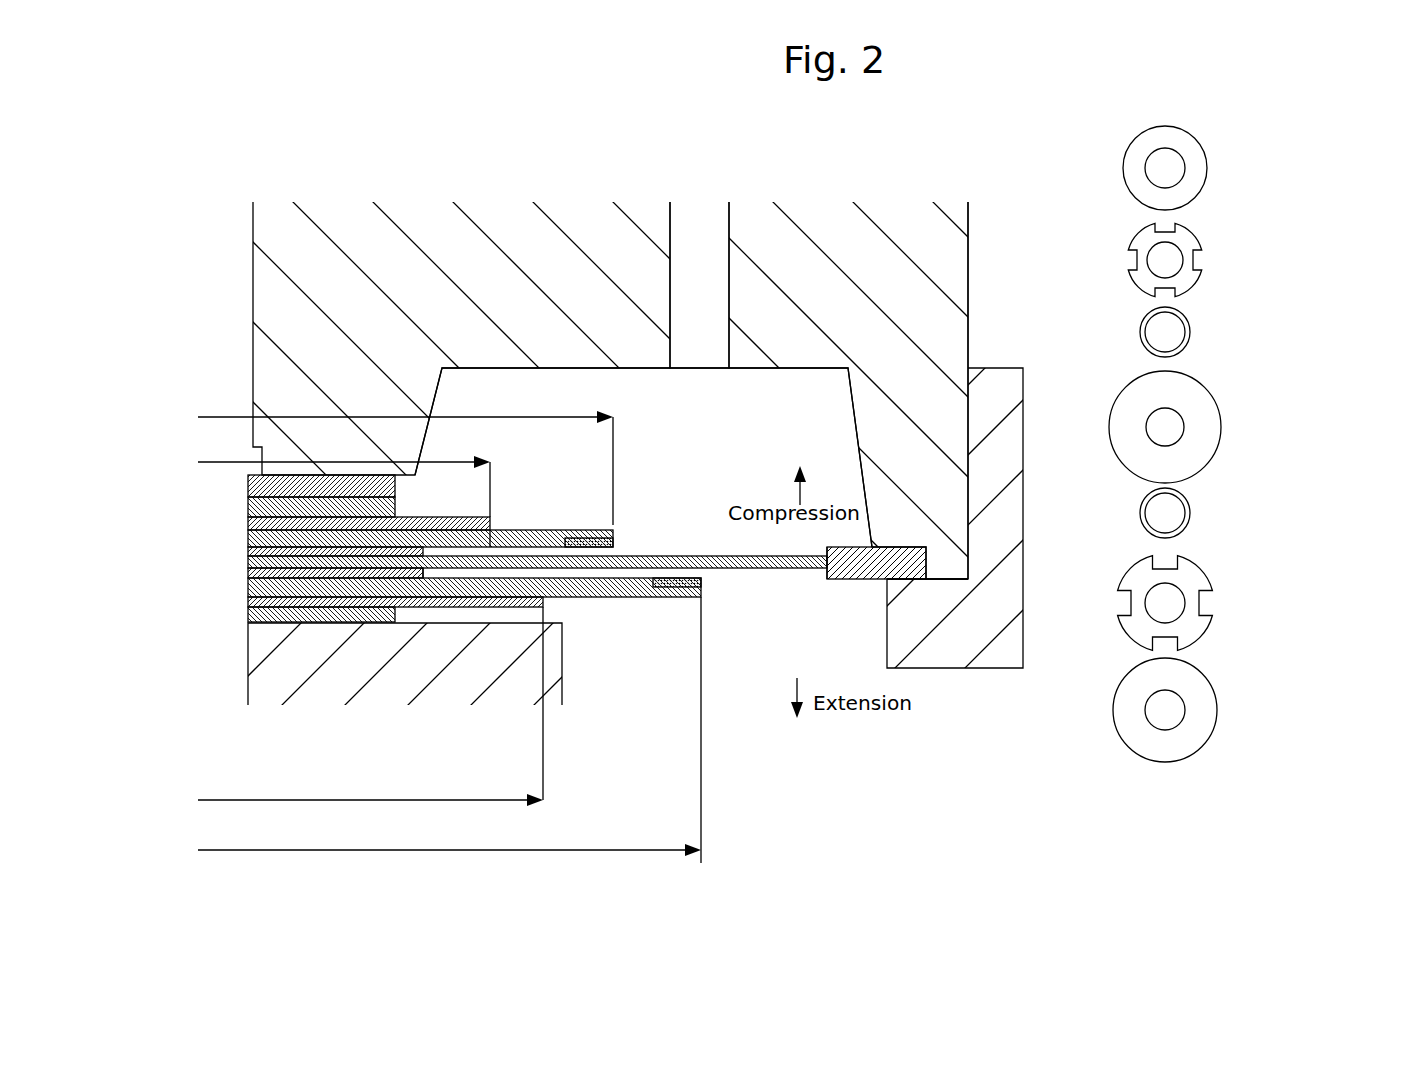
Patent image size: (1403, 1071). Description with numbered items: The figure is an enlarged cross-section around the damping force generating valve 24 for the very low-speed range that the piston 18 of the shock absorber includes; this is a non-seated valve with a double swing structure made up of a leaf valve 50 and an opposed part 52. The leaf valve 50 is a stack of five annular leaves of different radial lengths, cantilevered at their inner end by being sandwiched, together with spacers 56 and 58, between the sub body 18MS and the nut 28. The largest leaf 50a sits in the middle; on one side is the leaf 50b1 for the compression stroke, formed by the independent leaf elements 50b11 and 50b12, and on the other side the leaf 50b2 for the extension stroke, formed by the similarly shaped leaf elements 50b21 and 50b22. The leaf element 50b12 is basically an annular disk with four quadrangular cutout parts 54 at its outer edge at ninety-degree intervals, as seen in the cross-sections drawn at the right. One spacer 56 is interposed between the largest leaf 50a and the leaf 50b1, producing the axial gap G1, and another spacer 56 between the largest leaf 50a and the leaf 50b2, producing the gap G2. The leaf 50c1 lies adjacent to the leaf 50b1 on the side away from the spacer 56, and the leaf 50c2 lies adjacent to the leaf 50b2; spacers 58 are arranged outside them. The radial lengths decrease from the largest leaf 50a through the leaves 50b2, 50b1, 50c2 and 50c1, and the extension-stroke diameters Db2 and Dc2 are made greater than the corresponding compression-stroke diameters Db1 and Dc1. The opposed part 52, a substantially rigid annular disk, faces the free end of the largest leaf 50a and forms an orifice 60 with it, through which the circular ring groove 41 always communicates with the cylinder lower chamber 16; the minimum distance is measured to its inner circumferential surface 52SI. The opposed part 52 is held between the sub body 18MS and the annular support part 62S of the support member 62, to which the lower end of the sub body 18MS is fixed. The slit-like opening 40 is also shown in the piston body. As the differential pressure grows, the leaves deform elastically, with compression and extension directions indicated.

The cylinder lower chamber 16 is at (757, 665).
The piston 18 is at (990, 172).
The sub body 18MS is at (917, 255).
The damping force generating valve for very low-speed range 24 is at (742, 690).
The nut 28 is at (320, 685).
The slit 40 is at (700, 255).
The circular ring groove 41 is at (498, 387).
The leaf valve 50 is at (749, 489).
The largest leaf 50a is at (1110, 437).
The leaf for compression stroke 50b1 is at (749, 360).
The leaf element 50b11 is at (248, 548).
The leaf element 50b12 is at (248, 562).
The leaf for extension stroke 50b2 is at (813, 704).
The leaf element 50b21 is at (600, 600).
The leaf element 50b22 is at (585, 598).
The leaf for compression stroke 50c1 is at (248, 524).
The leaf for extension stroke 50c2 is at (248, 605).
The opposed part 52 is at (926, 557).
The inner circumferential surface 52SI is at (827, 580).
The cutout parts 54 is at (615, 540).
The spacer 56 is at (248, 575).
The spacer 58 is at (248, 503).
The orifice 60 is at (797, 573).
The support member 62 is at (1008, 522).
The support part 62S is at (955, 640).
The gap G1 is at (517, 548).
The gap G2 is at (483, 572).
The diameter of leaf 50b1 Db1 is at (405, 455).
The diameter of leaf 50c1 Dc1 is at (344, 470).
The diameter of leaf 50b2 Db2 is at (449, 730).
The diameter of leaf 50c2 Dc2 is at (370, 706).